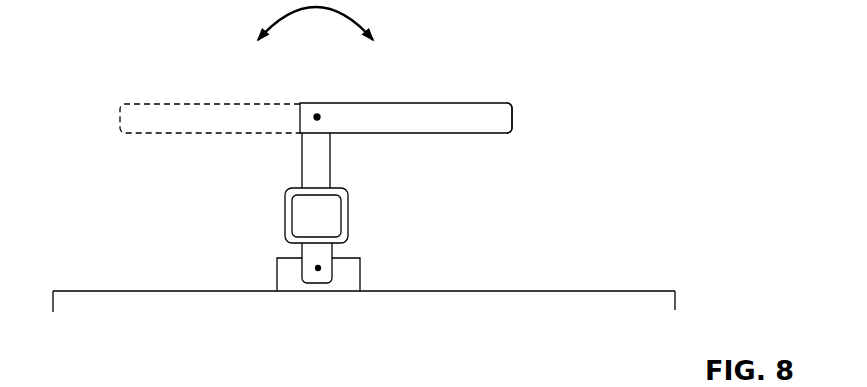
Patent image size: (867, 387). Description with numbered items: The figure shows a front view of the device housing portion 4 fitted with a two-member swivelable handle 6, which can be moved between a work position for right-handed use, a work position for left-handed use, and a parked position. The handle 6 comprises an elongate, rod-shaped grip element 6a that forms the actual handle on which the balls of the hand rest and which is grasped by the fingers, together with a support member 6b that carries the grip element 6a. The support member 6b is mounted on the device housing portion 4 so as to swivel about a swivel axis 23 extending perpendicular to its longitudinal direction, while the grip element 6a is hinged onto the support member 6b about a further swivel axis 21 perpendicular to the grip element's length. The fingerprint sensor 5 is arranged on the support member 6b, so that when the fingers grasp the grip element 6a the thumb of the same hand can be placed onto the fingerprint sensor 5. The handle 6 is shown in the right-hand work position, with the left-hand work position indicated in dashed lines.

The device housing portion 4 is at (87, 296).
The fingerprint sensor 5 is at (330, 214).
The handle 6 is at (404, 96).
The grip element 6a is at (477, 124).
The support member 6b is at (327, 152).
The swivel axis 21 is at (316, 114).
The swivel axis 23 is at (318, 271).